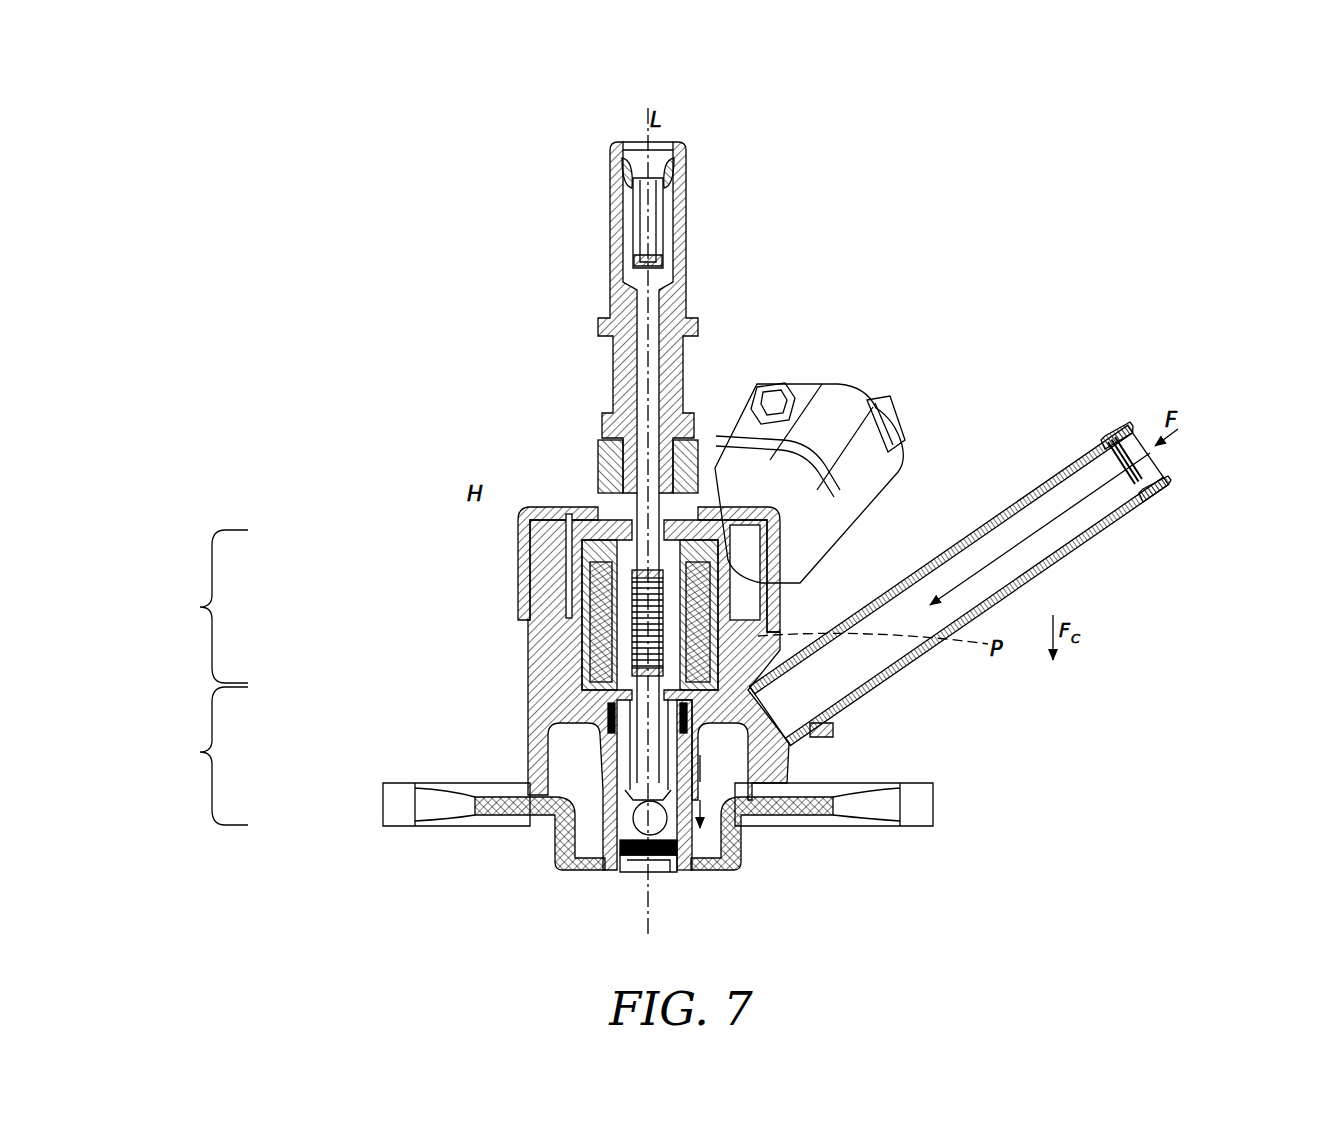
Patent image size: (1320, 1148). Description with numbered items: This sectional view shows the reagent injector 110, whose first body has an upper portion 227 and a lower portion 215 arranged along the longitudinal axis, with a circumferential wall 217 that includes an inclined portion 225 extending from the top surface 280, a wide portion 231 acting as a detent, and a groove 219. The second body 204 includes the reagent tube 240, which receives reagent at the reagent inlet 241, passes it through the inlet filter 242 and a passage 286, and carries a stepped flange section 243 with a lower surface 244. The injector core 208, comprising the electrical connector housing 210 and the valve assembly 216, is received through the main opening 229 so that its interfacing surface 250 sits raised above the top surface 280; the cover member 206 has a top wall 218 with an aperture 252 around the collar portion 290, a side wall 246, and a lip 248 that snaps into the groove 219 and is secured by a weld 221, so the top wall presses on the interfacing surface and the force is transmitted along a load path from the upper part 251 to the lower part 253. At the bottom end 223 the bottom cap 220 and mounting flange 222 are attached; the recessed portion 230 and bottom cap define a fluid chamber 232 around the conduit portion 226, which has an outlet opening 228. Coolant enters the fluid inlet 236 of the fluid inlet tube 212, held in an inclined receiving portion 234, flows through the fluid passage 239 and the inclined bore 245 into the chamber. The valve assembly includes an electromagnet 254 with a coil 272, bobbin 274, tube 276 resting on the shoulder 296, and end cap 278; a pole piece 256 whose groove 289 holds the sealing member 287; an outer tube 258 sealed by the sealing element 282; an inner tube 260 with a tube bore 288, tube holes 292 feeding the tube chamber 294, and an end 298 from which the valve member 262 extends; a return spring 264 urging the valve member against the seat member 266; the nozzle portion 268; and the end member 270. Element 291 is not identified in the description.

The injector 110 is at (236, 248).
The second injector body 204 is at (573, 300).
The cover member 206 is at (522, 505).
The injector core 208 is at (905, 330).
The electrical connector housing 210 is at (857, 385).
The fluid inlet tube 212 is at (1170, 483).
The lower portion 215 is at (202, 756).
The valve assembly 216 is at (575, 628).
The circumferential wall 217 is at (570, 675).
The top wall 218 is at (520, 497).
The groove 219 is at (575, 645).
The bottom cap 220 is at (730, 882).
The weld 221 is at (575, 620).
The mounting flange 222 is at (800, 823).
The bottom end 223 is at (537, 822).
The inclined portion 225 is at (580, 530).
The conduit portion 226 is at (745, 870).
The upper portion 227 is at (202, 606).
The outlet opening 228 is at (632, 900).
The main opening 229 is at (742, 592).
The recessed portion 230 is at (570, 778).
The wide portion 231 is at (530, 575).
The fluid chamber 232 is at (600, 862).
The receiving portion 234 is at (800, 712).
The fluid inlet 236 is at (1170, 460).
The fluid passage 239 is at (1030, 555).
The reagent tube 240 is at (688, 300).
The reagent inlet 241 is at (668, 148).
The inlet filter 242 is at (680, 170).
The flange section 243 is at (603, 415).
The lower surface 244 is at (598, 440).
The inclined bore 245 is at (780, 730).
The side wall 246 is at (545, 538).
The lip 248 is at (545, 590).
The interfacing surface 250 is at (592, 494).
The upper part 251 is at (582, 478).
The aperture 252 is at (560, 480).
The lower part 253 is at (790, 678).
The electromagnet 254 is at (563, 655).
The pole piece 256 is at (713, 447).
The outer tube 258 is at (745, 785).
The inner tube 260 is at (830, 655).
The valve member 262 is at (760, 750).
The return spring 264 is at (768, 612).
The seat member 266 is at (612, 872).
The nozzle portion 268 is at (660, 893).
The end member 270 is at (692, 872).
The coil 272 is at (578, 660).
The bobbin 274 is at (600, 708).
The tube 276 is at (600, 690).
The end cap 278 is at (730, 572).
The top surface 280 is at (545, 520).
The sealing element 282 is at (710, 525).
The passage 286 is at (655, 357).
The sealing member 287 is at (705, 540).
The tube bore 288 is at (800, 690).
The groove 289 is at (700, 535).
The collar portion 290 is at (760, 478).
The lip 291 is at (735, 850).
The tube hole 292 is at (577, 858).
The tube chamber 294 is at (548, 820).
The shoulder 296 is at (610, 728).
The end 298 is at (600, 755).